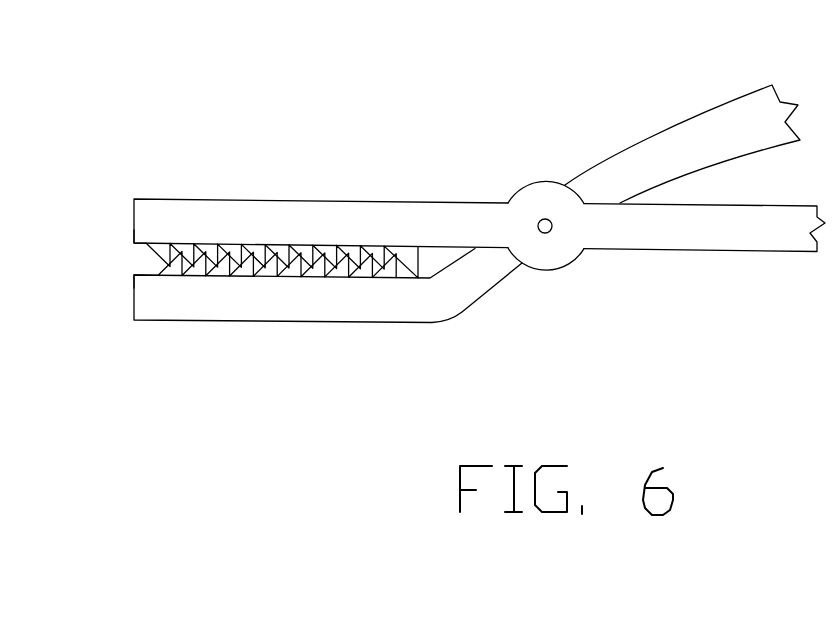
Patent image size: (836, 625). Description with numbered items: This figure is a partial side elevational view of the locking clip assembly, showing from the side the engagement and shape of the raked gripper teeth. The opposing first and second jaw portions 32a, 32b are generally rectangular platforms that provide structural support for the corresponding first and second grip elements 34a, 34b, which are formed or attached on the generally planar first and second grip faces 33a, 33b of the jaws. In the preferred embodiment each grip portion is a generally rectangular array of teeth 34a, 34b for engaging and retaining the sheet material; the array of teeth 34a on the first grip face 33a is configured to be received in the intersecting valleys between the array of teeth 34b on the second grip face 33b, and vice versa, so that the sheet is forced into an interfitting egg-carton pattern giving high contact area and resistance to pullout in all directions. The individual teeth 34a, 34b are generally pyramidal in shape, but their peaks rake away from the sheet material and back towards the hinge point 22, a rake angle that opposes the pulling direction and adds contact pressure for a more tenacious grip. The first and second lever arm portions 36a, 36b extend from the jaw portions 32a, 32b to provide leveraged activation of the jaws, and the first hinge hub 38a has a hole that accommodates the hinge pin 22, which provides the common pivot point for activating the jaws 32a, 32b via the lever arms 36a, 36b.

The hinge pin 22 is at (548, 232).
The first jaw portion 32a is at (310, 222).
The second jaw portion 32b is at (205, 312).
The first grip face 33a is at (134, 245).
The second grip face 33b is at (134, 275).
The first grip element 34a is at (230, 247).
The second grip element 34b is at (312, 267).
The first lever arm portion 36a is at (700, 235).
The second lever arm portion 36b is at (657, 145).
The first hinge hub 38a is at (528, 195).